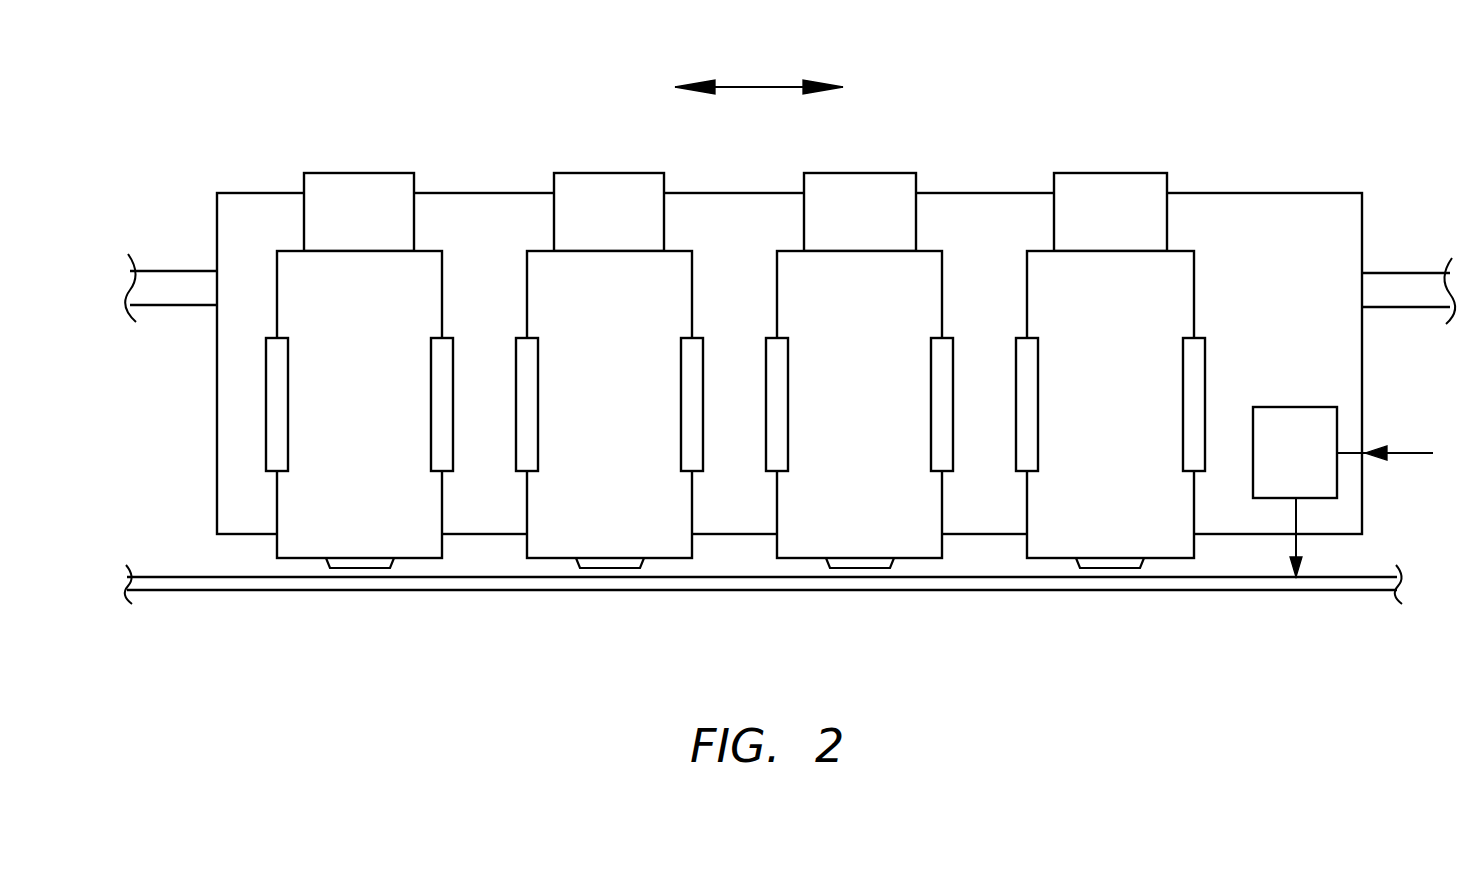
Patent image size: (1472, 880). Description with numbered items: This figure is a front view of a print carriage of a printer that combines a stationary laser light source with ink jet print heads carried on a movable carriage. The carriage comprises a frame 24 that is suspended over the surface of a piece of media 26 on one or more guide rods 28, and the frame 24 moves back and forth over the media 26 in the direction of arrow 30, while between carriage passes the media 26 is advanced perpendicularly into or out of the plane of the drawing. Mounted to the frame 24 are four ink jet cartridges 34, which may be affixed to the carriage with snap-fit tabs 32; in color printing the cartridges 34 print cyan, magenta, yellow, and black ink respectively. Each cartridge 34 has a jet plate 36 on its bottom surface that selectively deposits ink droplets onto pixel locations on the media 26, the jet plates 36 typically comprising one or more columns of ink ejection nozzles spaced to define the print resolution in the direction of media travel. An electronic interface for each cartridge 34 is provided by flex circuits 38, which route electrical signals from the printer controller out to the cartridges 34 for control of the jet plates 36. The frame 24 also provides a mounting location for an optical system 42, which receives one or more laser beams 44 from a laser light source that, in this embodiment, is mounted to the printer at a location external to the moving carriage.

The frame 24 is at (1217, 215).
The media 26 is at (1247, 585).
The guide rods 28 is at (1388, 285).
The arrow 30 is at (748, 85).
The snap-fit tabs 32 is at (438, 424).
The ink jet cartridges 34 is at (333, 303).
The jet plates 36 is at (360, 568).
The flex circuits 38 is at (368, 192).
The optical system 42 is at (1295, 492).
The laser beams 44 is at (1403, 455).